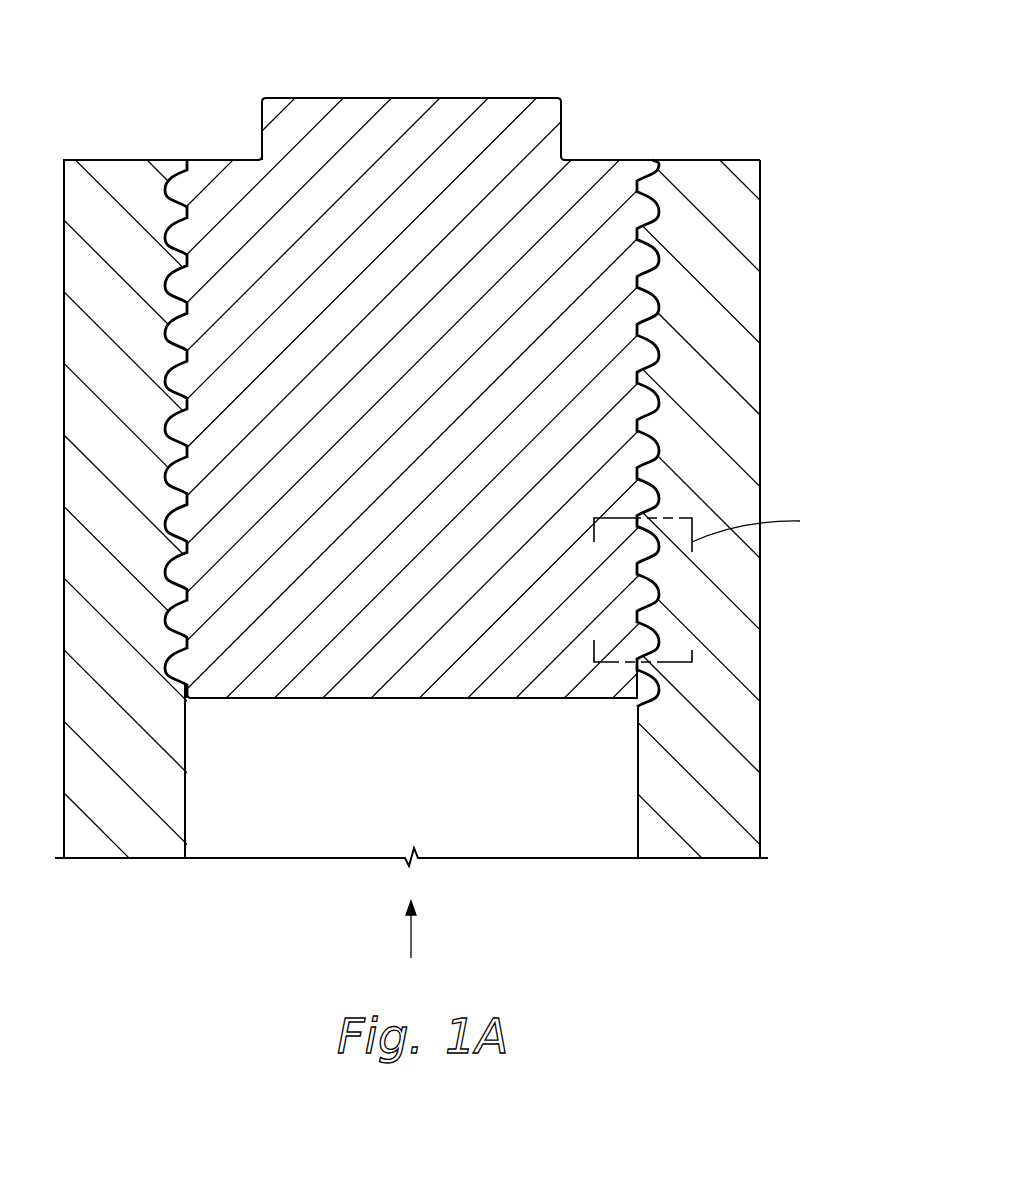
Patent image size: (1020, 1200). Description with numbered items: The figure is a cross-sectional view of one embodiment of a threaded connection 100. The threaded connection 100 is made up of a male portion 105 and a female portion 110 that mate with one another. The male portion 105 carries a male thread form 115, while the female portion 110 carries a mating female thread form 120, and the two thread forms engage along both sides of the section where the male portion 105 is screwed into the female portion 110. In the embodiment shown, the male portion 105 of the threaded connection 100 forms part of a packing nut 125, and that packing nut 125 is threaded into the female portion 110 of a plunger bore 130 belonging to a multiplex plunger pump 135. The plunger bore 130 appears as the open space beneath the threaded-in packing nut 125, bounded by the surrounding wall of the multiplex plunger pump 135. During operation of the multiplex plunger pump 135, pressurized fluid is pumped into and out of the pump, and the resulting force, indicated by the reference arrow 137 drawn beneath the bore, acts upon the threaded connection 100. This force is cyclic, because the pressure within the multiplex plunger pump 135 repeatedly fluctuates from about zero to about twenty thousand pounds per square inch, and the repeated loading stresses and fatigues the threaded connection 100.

The threaded connection 100 is at (192, 30).
The male portion 105 is at (585, 158).
The female portion 110 is at (760, 222).
The male thread form 115 is at (621, 721).
The female thread form 120 is at (648, 150).
The packing nut 125 is at (228, 157).
The plunger bore 130 is at (432, 785).
The multiplex plunger pump 135 is at (760, 800).
The reference arrow 137 is at (410, 936).